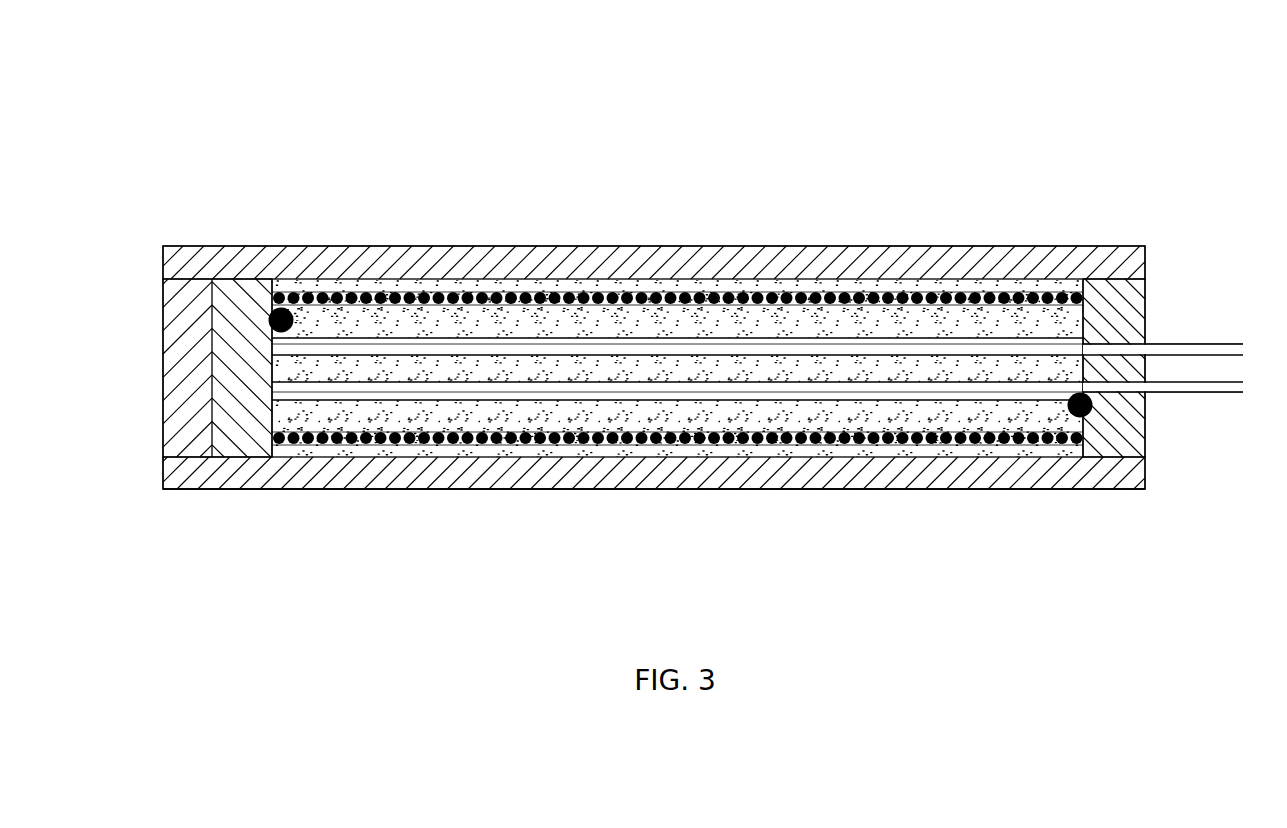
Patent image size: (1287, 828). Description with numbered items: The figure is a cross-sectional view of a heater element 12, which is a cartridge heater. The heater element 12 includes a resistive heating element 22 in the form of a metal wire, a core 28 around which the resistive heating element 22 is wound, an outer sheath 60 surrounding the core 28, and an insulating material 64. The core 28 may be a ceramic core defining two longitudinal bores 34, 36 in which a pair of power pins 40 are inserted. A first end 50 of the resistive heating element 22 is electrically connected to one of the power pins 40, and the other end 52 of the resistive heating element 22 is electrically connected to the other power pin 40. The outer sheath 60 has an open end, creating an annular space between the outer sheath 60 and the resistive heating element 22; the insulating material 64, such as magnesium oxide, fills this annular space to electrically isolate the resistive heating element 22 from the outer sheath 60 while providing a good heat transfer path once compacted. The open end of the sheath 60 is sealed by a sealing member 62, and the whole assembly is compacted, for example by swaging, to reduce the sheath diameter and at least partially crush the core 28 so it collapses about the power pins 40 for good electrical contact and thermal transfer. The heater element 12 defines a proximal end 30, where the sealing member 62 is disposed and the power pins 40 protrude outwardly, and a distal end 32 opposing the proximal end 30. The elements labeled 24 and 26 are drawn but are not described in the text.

The heater element 12 is at (703, 322).
The resistive heating element 22 is at (468, 297).
The second housing plate 24 is at (1055, 455).
The first end wall 26 is at (276, 272).
The core 28 is at (677, 360).
The proximal end 30 is at (1125, 233).
The distal end 32 is at (187, 507).
The longitudinal bore 34 is at (652, 342).
The longitudinal bore 36 is at (842, 400).
The power pin 40 is at (765, 350).
The first end of the resistive heating element 50 is at (1092, 407).
The other end of the resistive heating element 52 is at (284, 307).
The outer sheath 60 is at (368, 262).
The sealing member 62 is at (1133, 312).
The insulating material 64 is at (577, 287).